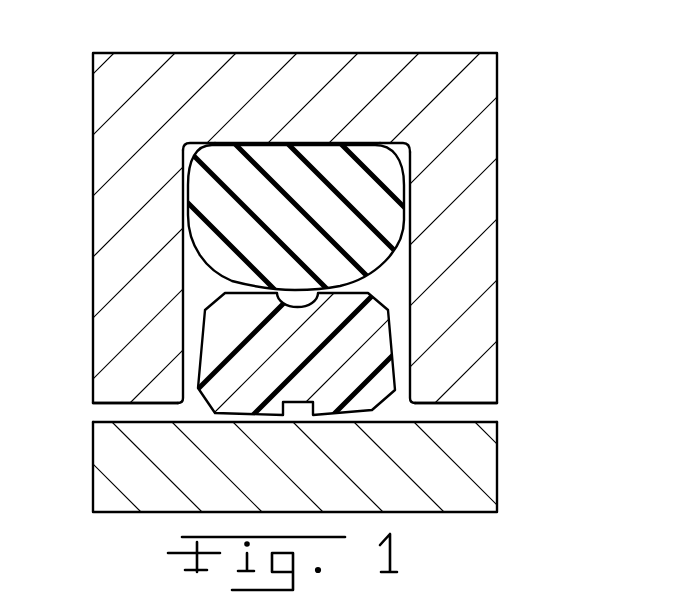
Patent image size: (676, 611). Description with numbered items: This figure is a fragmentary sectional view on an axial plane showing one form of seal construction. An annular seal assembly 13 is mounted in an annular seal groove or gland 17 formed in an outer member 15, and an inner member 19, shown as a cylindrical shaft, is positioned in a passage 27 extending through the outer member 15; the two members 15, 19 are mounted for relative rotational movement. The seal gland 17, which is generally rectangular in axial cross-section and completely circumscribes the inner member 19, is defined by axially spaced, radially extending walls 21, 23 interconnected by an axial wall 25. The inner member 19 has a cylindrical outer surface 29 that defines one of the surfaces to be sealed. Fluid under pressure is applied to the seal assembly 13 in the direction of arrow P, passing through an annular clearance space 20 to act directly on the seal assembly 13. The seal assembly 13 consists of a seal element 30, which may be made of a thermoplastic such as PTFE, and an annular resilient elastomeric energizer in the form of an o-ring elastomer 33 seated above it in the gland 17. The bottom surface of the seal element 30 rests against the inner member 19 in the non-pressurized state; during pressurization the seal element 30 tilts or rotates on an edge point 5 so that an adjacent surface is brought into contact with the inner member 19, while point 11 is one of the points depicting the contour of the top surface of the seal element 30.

The edge point 5 is at (340, 347).
The edge point 11 is at (338, 205).
The annular seal assembly 13 is at (292, 201).
The outer member 15 is at (483, 243).
The annular seal groove or gland 17 is at (402, 158).
The inner member 19 is at (293, 462).
The annular clearance space 20 is at (136, 403).
The radially extending wall 21 is at (184, 283).
The radially extending wall 23 is at (409, 293).
The axial wall 25 is at (198, 144).
The passage 27 is at (490, 404).
The cylindrical outer surface 29 is at (474, 421).
The seal element 30 is at (374, 352).
The o-ring elastomer 33 is at (384, 213).
The arrow P is at (106, 410).